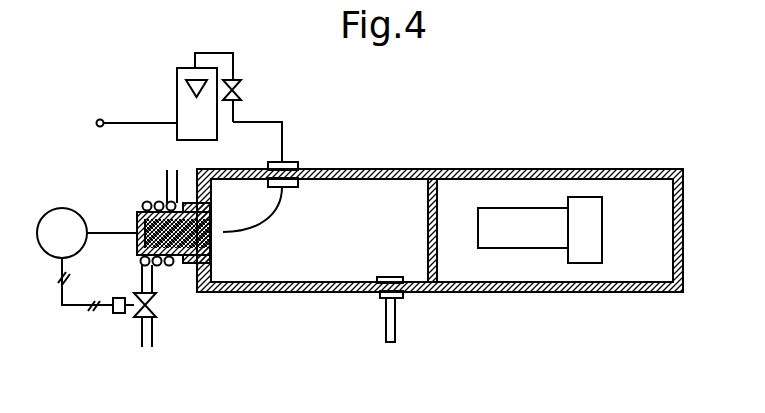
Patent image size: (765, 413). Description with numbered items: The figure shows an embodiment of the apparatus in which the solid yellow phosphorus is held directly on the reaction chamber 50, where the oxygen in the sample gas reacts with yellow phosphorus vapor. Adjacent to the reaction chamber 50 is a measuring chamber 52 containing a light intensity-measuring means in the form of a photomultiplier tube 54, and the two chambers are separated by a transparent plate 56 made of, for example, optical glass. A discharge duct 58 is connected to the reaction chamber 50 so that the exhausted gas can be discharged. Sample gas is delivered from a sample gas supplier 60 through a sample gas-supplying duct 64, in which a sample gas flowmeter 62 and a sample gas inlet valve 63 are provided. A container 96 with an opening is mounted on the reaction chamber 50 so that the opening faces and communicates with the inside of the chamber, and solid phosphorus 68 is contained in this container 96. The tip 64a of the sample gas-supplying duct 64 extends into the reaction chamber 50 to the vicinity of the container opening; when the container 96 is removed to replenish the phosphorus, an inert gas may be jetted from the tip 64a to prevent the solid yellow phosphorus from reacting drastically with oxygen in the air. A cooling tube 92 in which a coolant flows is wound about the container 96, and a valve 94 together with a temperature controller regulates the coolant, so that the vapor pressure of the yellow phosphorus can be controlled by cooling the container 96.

The reaction chamber 50 is at (318, 275).
The measuring chamber 52 is at (648, 188).
The photomultiplier tube 54 is at (528, 217).
The transparent plate 56 is at (425, 207).
The discharge duct 58 is at (396, 312).
The sample gas supplier 60 is at (100, 119).
The sample gas flowmeter 62 is at (178, 90).
The sample gas inlet valve 63 is at (243, 87).
The sample gas-supplying duct 64 is at (268, 122).
The tip of the sample gas supplying duct 64a is at (281, 203).
The solid phosphorus 68 is at (210, 235).
The cooling tube 92 is at (171, 265).
The valve 94 is at (133, 312).
The container 96 is at (137, 225).